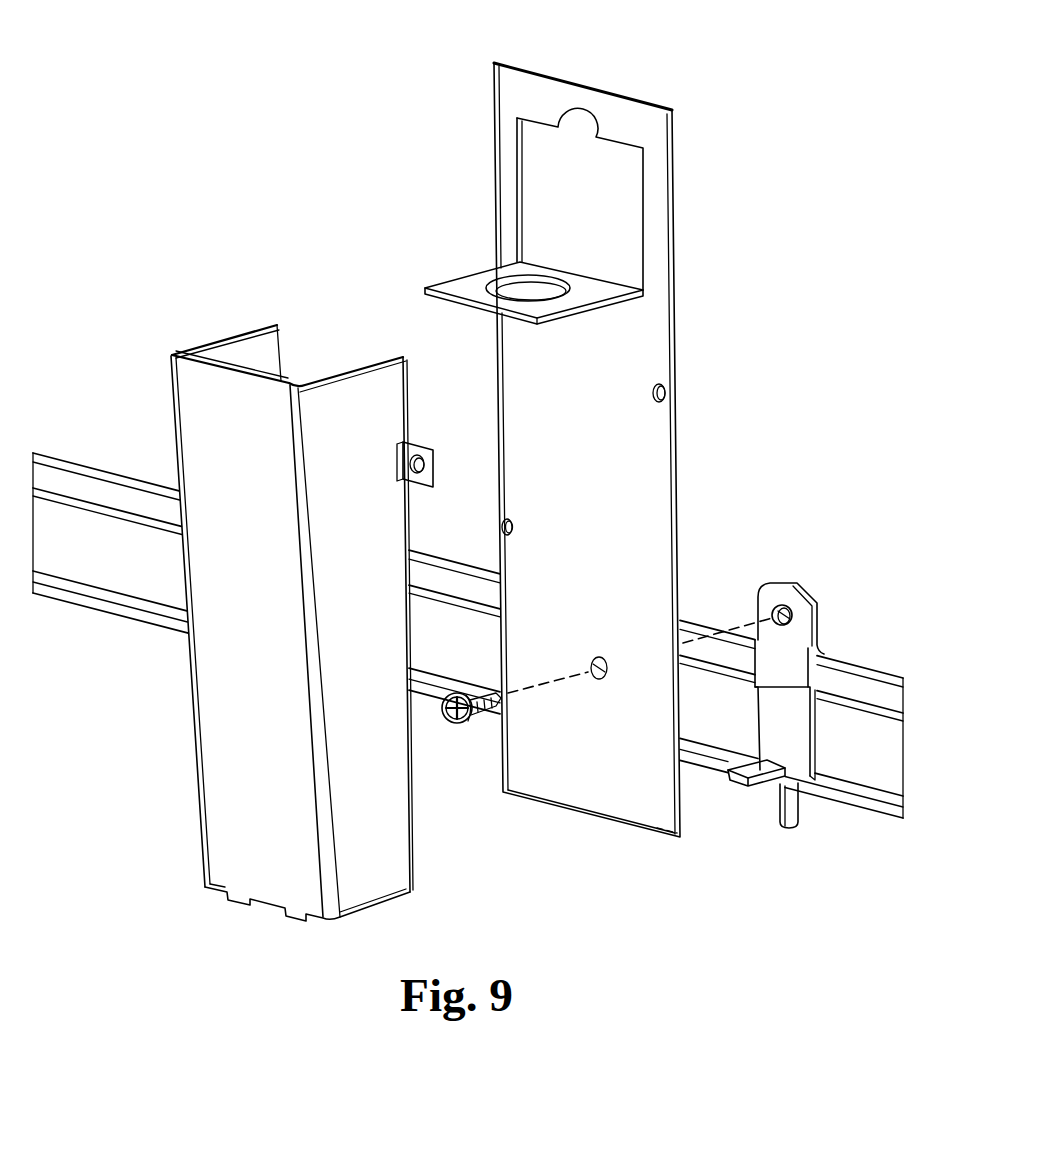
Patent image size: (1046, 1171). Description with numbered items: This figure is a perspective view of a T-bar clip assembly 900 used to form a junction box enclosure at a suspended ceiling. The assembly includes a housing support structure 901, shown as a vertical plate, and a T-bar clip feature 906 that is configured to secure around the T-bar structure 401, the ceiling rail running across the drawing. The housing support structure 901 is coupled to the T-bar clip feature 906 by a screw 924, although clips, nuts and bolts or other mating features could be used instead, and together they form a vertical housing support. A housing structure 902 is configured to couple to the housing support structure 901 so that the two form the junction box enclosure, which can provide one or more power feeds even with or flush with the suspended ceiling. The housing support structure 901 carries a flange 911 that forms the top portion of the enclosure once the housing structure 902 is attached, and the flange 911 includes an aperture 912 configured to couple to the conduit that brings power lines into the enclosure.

The T-bar clip assembly 900 is at (230, 107).
The housing support structure 901 is at (627, 118).
The housing structure 902 is at (193, 383).
The T-bar clip feature 906 is at (813, 600).
The flange 911 is at (457, 287).
The aperture 912 is at (513, 280).
The screw 924 is at (447, 727).
The T-bar structure 401 is at (863, 762).